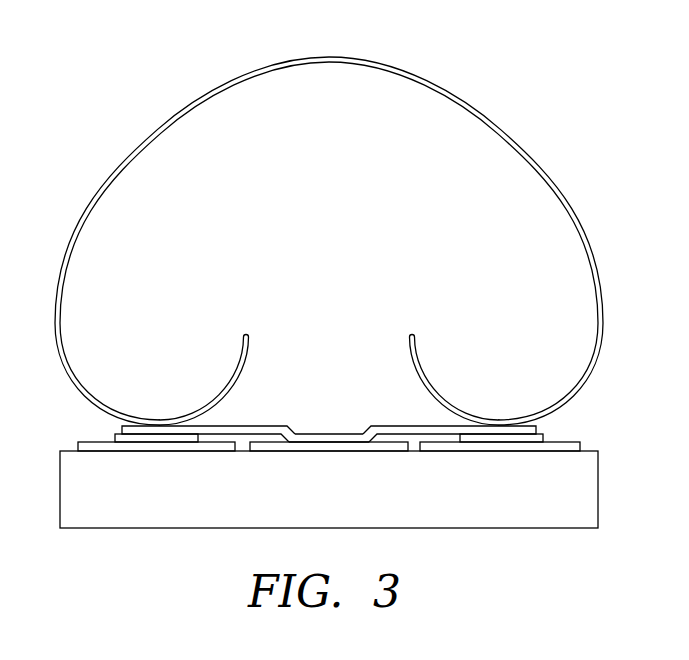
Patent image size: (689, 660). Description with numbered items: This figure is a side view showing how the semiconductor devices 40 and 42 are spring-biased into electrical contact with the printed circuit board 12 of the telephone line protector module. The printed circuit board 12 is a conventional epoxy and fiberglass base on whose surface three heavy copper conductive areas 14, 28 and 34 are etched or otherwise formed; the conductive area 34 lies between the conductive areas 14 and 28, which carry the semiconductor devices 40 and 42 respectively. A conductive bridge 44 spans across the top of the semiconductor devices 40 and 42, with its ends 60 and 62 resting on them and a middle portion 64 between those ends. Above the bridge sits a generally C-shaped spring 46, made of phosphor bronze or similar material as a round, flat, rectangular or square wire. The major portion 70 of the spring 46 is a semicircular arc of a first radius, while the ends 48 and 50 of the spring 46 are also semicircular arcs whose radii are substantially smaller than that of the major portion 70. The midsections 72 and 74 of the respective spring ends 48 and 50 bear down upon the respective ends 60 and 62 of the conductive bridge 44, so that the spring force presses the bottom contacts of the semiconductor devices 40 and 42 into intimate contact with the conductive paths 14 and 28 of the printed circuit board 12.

The printed circuit board 12 is at (598, 484).
The conductive area 14 is at (500, 452).
The conductive area 28 is at (147, 453).
The conductive area 34 is at (312, 453).
The semiconductor device 40 is at (547, 438).
The semiconductor device 42 is at (113, 438).
The conductive bridge 44 is at (310, 376).
The C-shape spring 46 is at (329, 236).
The spring end 48 is at (241, 358).
The spring end 50 is at (417, 357).
The bridge end 60 is at (253, 425).
The bridge end 62 is at (398, 425).
The base connecting portion 64 is at (328, 433).
The major portion of the spring 70 is at (328, 63).
The midsection of spring end 72 is at (163, 421).
The midsection of spring end 74 is at (497, 419).